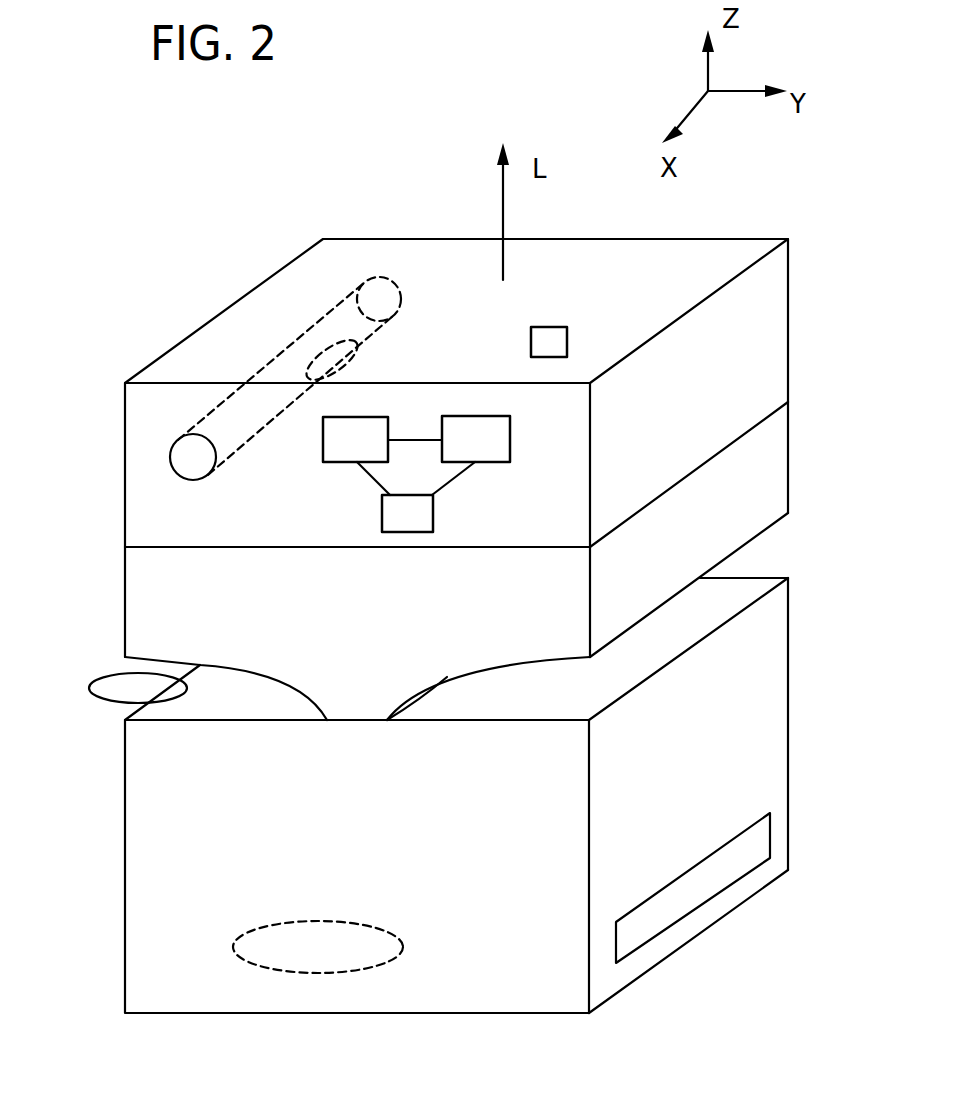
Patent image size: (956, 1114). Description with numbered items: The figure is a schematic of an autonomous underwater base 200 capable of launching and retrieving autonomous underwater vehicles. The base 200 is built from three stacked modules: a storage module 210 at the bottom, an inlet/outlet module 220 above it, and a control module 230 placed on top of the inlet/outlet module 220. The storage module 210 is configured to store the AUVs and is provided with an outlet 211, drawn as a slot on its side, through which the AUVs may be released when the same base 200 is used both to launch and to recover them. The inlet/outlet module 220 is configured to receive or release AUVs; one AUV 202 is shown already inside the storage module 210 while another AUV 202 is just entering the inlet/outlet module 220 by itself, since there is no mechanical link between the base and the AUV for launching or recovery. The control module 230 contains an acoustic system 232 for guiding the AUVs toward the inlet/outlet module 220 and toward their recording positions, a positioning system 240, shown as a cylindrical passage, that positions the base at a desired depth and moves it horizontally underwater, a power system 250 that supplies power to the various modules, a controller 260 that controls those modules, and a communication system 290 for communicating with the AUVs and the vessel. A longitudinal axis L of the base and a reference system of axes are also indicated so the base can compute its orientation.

The base 200 is at (146, 168).
The AUV 202 is at (108, 702).
The storage module 210 is at (125, 883).
The outlet 211 is at (770, 833).
The inlet/outlet module 220 is at (125, 582).
The control module 230 is at (125, 443).
The acoustic system 232 is at (553, 327).
The positioning system 240 is at (333, 357).
The power system 250 is at (370, 417).
The controller 260 is at (475, 416).
The communication system 290 is at (433, 513).